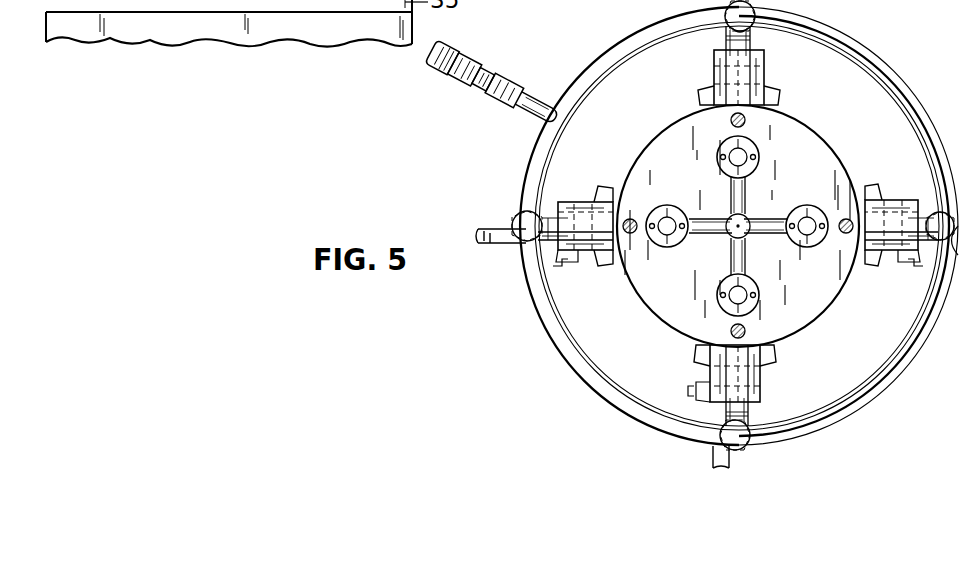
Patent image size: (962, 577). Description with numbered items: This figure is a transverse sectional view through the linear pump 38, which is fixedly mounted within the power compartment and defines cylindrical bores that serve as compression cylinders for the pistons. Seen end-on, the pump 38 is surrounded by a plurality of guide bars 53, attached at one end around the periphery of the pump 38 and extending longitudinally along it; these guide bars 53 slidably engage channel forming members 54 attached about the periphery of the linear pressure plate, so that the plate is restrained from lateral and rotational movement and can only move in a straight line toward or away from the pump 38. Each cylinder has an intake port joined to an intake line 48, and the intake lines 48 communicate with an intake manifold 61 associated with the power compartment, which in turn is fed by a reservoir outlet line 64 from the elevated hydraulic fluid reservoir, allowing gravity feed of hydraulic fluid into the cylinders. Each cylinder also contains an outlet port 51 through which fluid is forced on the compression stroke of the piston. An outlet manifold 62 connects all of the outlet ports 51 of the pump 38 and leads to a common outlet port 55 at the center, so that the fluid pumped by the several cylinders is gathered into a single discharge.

The linear pump 38 is at (834, 139).
The intake line 48 is at (950, 190).
The outlet port 51 is at (668, 206).
The guide bar 53 is at (715, 70).
The channel forming member 54 is at (704, 88).
The common outlet port 55 is at (742, 233).
The intake manifold 61 is at (860, 58).
The outlet manifold 62 is at (742, 199).
The reservoir outlet line 64 is at (463, 47).